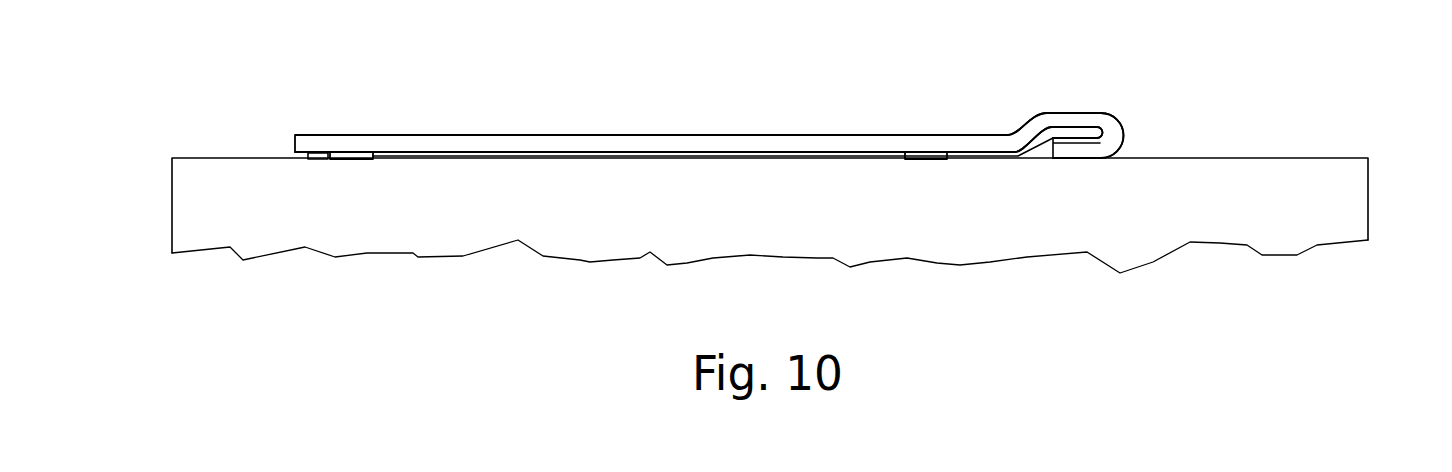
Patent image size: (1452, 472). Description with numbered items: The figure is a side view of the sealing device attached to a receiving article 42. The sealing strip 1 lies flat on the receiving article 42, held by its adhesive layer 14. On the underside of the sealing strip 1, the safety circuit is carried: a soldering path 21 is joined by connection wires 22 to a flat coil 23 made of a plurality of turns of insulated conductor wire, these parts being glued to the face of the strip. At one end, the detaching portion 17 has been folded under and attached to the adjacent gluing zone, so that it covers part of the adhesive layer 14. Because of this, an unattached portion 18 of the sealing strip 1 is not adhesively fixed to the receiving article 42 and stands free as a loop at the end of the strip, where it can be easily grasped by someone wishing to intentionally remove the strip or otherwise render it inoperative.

The sealing strip 1 is at (549, 135).
The adhesive layer 14 is at (1097, 132).
The detaching portion 17 is at (1082, 159).
The unattached portion 18 is at (1067, 113).
The soldering path 21 is at (357, 160).
The connection wires 22 is at (716, 154).
The flat coil 23 is at (933, 160).
The receiving article 42 is at (1322, 212).